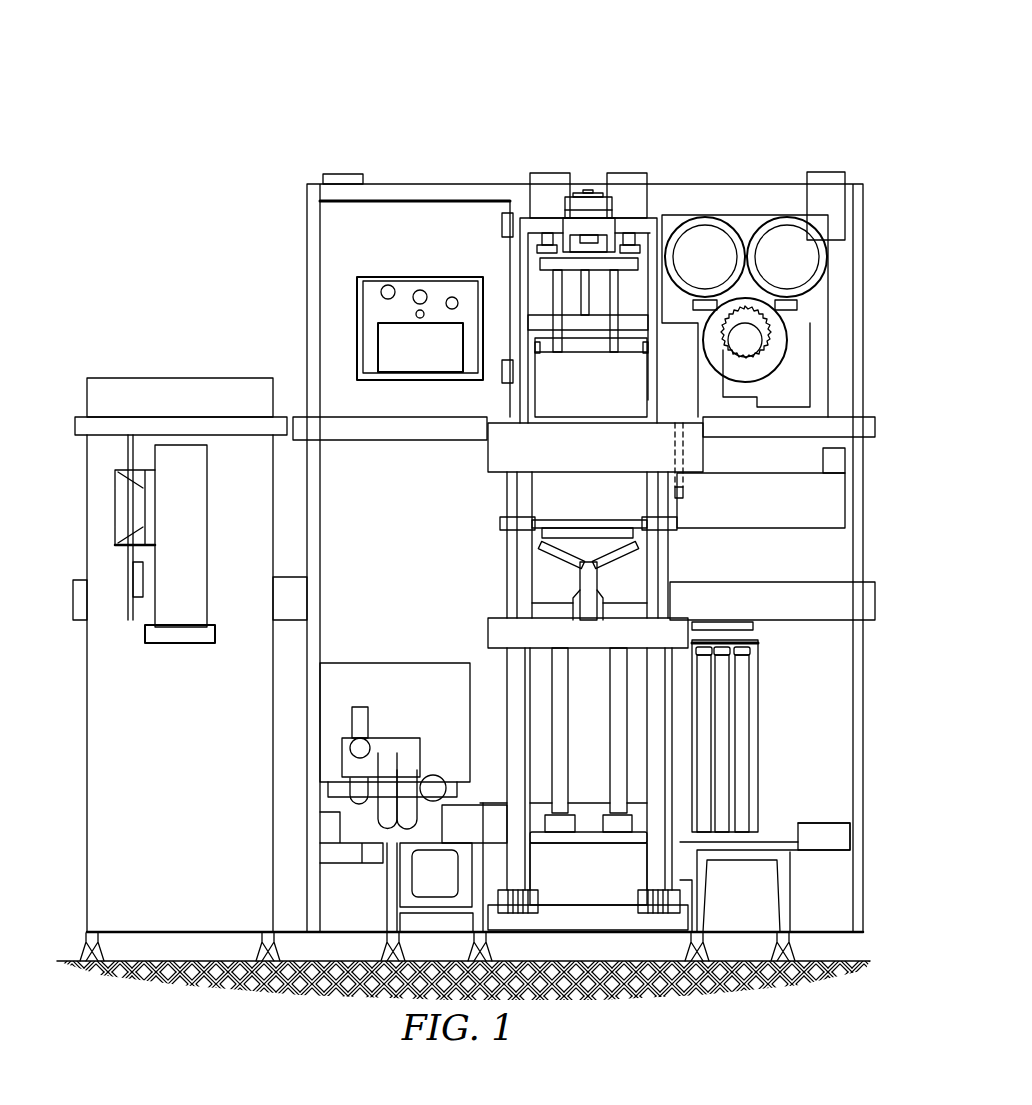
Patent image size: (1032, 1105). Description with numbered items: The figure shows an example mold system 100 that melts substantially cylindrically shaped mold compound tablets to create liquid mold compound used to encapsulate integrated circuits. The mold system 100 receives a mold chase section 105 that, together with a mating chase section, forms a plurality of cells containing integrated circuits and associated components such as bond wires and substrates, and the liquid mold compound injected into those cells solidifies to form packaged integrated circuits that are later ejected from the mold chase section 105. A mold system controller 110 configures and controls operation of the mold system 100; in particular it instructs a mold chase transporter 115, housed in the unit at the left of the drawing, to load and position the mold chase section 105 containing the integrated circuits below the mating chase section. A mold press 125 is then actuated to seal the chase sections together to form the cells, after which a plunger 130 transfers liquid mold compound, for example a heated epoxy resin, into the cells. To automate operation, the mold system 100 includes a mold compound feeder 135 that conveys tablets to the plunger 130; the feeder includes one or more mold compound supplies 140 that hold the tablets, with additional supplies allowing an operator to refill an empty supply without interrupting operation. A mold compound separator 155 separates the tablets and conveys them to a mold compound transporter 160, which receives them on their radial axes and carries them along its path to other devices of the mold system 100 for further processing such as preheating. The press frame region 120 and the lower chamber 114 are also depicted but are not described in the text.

The mold system 100 is at (220, 59).
The mold chase section 105 is at (590, 538).
The mold system controller 110 is at (418, 221).
The process chamber 114 is at (558, 389).
The mold chase transporter 115 is at (104, 482).
The press frame 120 is at (546, 501).
The mold press 125 is at (583, 795).
The plunger 130 is at (542, 322).
The mold compound feeder 135 is at (736, 300).
The mold compound supply 140 is at (810, 258).
The mold compound separator 155 is at (686, 490).
The mold compound transporter 160 is at (826, 503).